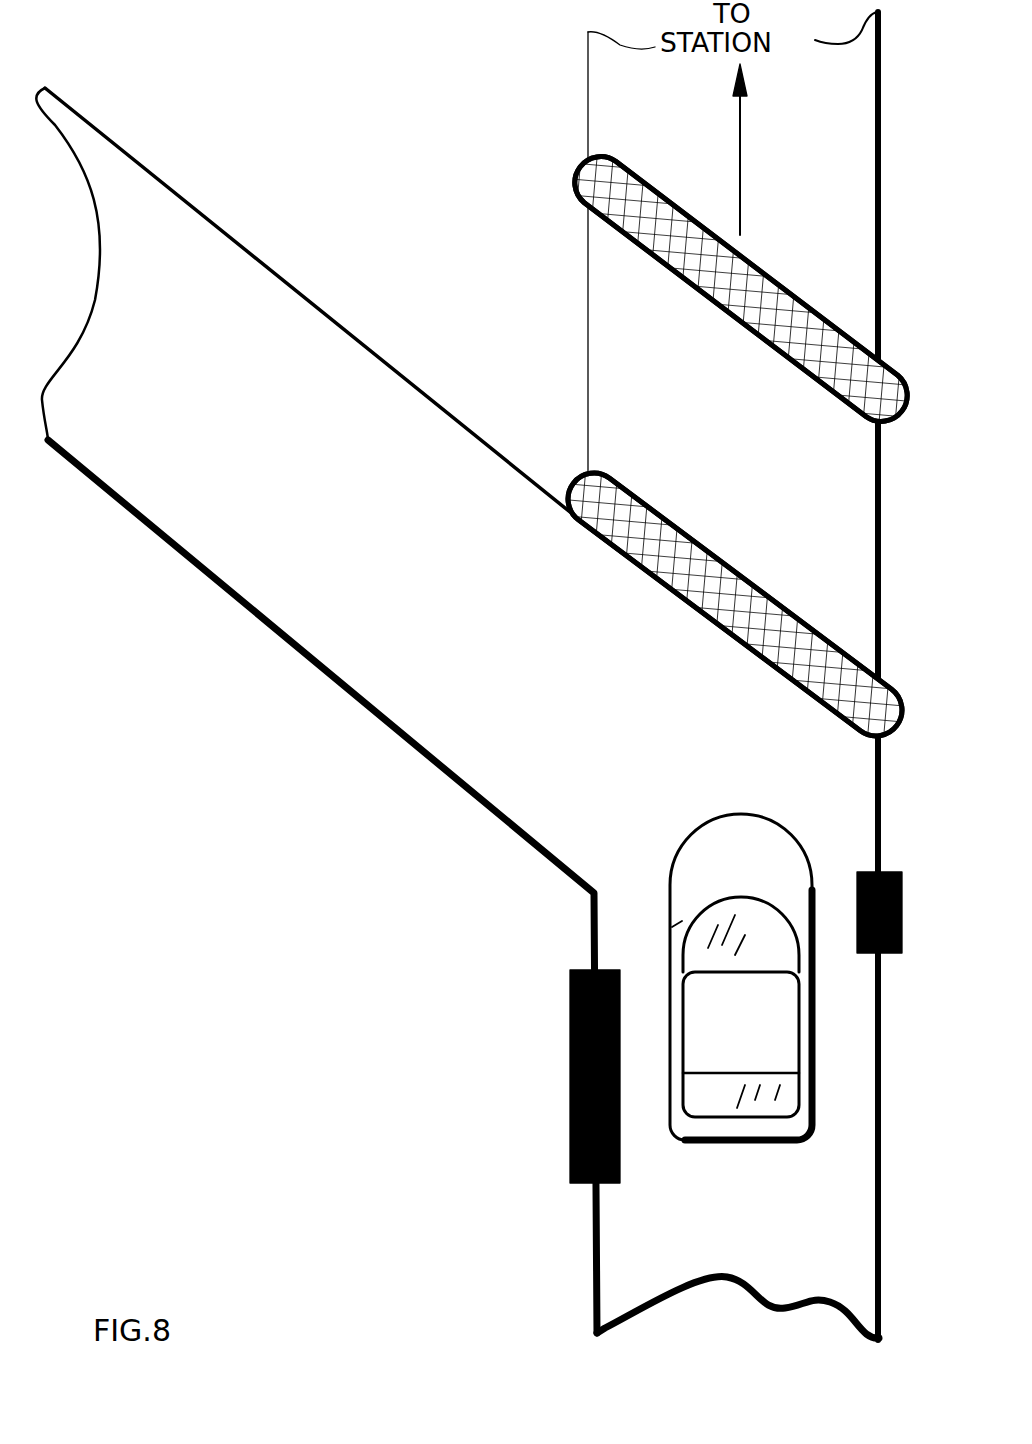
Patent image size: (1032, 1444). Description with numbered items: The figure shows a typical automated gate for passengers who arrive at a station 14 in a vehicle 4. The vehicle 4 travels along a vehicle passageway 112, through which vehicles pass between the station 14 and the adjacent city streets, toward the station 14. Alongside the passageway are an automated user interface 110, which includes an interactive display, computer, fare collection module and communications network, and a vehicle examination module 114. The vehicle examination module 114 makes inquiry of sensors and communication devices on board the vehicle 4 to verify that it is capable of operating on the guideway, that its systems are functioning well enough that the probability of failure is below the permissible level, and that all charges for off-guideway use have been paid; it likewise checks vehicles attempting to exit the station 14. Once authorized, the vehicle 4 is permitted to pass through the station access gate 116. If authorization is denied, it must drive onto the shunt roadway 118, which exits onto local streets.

The vehicle 4 is at (710, 868).
The station 14 is at (805, 57).
The automated user interface 110 is at (570, 1058).
The vehicle passageway 112 is at (635, 1287).
The vehicle examination module 114 is at (903, 903).
The station access gate 116 is at (577, 503).
The shunt roadway 118 is at (238, 572).